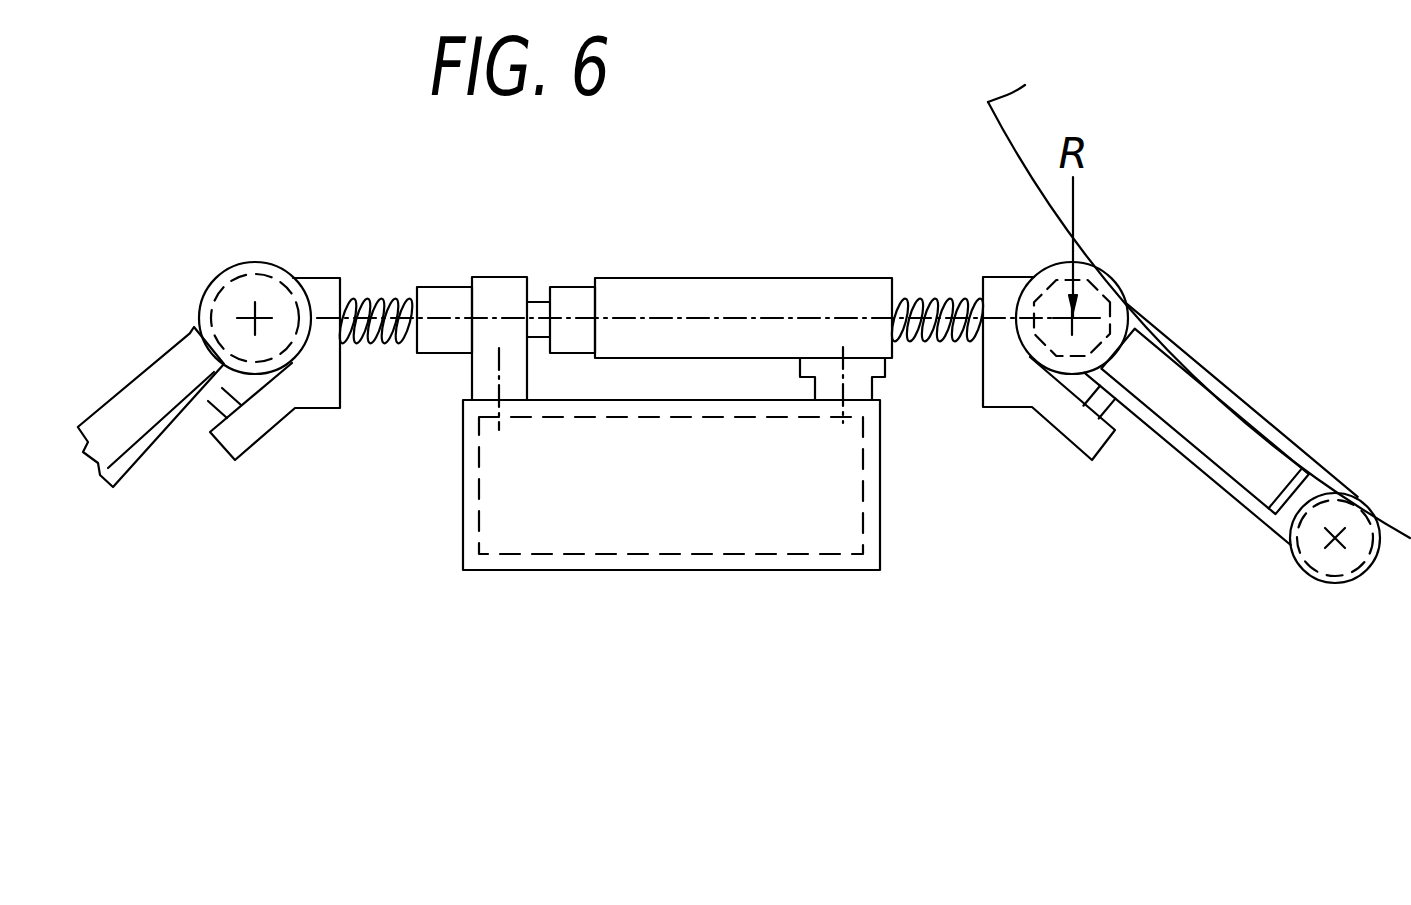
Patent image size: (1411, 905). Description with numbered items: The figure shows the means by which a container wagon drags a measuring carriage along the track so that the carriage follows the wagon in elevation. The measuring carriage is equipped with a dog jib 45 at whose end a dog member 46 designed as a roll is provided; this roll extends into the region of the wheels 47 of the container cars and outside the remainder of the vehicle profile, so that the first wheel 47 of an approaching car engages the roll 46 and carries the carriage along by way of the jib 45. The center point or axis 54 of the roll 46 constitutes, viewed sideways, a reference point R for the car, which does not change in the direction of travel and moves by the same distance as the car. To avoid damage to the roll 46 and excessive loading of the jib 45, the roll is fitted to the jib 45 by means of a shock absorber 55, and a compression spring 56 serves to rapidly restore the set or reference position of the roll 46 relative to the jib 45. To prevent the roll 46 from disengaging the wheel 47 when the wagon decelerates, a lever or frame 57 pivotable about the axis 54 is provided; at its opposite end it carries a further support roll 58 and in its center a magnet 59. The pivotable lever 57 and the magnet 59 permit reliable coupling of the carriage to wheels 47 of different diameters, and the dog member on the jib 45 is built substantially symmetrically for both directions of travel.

The dog jib 45 is at (818, 560).
The dog member 46 is at (242, 275).
The wheel 47 is at (1018, 137).
The axis 54 is at (1077, 313).
The shock absorber 55 is at (715, 292).
The compression spring 56 is at (930, 342).
The lever 57 is at (1280, 528).
The support roll 58 is at (1343, 578).
The magnet 59 is at (1255, 445).